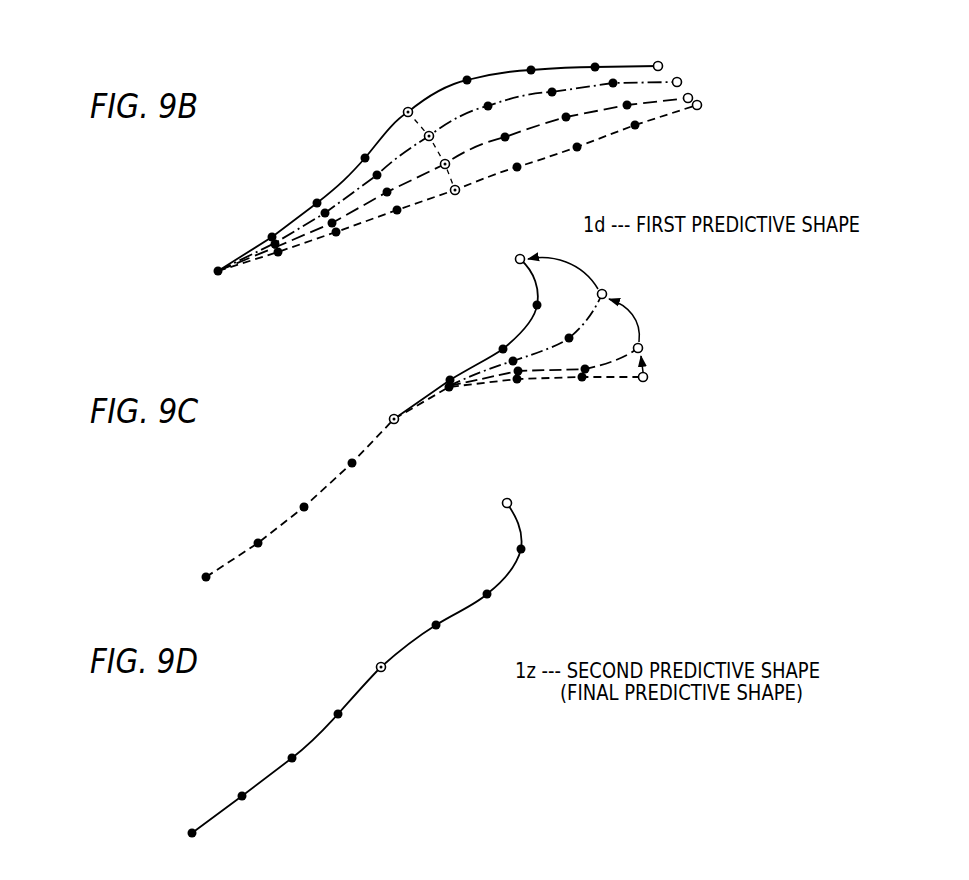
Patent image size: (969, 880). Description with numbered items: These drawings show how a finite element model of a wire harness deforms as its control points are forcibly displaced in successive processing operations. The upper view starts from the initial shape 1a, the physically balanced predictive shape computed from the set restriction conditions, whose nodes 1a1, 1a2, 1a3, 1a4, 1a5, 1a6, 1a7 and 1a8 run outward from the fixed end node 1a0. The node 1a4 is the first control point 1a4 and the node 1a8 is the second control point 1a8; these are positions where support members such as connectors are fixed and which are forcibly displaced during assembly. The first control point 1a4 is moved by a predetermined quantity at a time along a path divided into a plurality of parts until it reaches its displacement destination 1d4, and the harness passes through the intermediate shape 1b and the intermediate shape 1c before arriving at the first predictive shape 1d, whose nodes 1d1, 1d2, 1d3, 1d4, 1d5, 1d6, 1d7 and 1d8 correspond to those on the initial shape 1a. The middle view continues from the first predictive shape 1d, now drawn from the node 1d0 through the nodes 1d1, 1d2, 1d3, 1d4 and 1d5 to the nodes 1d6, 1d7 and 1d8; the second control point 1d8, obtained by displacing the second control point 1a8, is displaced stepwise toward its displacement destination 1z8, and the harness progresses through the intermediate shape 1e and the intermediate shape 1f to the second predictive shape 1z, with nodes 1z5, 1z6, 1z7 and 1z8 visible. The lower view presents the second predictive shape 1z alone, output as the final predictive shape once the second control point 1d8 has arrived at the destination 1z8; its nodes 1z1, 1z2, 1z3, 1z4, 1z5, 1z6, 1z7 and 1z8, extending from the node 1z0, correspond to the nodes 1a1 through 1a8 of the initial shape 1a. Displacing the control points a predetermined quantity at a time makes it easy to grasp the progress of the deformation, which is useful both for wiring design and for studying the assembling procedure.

In FIG. 9B, the initial shape 1a is at (627, 136).
In FIG. 9B, the intermediate shape 1b is at (462, 151).
In FIG. 9B, the intermediate shape 1c is at (447, 115).
In FIG. 9B, the first predictive shape 1d is at (629, 62).
In FIG. 9C, the first predictive shape 1d is at (378, 430).
In FIG. 9C, the intermediate shape 1e is at (603, 360).
In FIG. 9C, the intermediate shape 1f is at (584, 320).
In FIG. 9C, the second predictive shape 1z is at (530, 285).
In FIG. 9D, the second predictive shape 1z is at (360, 682).
In FIG. 9B, the initial shape point 0 1a0 is at (221, 274).
In FIG. 9B, the node 1a1 is at (280, 255).
In FIG. 9B, the node 1a2 is at (338, 236).
In FIG. 9B, the node 1a3 is at (399, 214).
In FIG. 9B, the first control point 1a4 is at (458, 193).
In FIG. 9B, the node 1a5 is at (518, 171).
In FIG. 9B, the node 1a6 is at (579, 151).
In FIG. 9B, the node 1a7 is at (637, 129).
In FIG. 9B, the second control point 1a8 is at (701, 107).
In FIG. 9C, the first predictive shape point 0 1d0 is at (209, 580).
In FIG. 9B, the node 1d1 is at (272, 233).
In FIG. 9C, the node 1d1 is at (261, 546).
In FIG. 9B, the node 1d2 is at (317, 199).
In FIG. 9C, the node 1d2 is at (307, 510).
In FIG. 9B, the node 1d3 is at (364, 154).
In FIG. 9C, the node 1d3 is at (355, 466).
In FIG. 9B, the displacement destination 1d4 is at (405, 108).
In FIG. 9C, the displacement destination 1d4 is at (397, 423).
In FIG. 9B, the node 1d5 is at (467, 76).
In FIG. 9C, the node 1d5 is at (450, 391).
In FIG. 9B, the node 1d6 is at (531, 66).
In FIG. 9C, the node 1d6 is at (518, 383).
In FIG. 9B, the node 1d7 is at (595, 63).
In FIG. 9C, the node 1d7 is at (583, 381).
In FIG. 9B, the second control point 1d8 is at (661, 62).
In FIG. 9C, the second control point 1d8 is at (644, 381).
In FIG. 9D, the second predictive shape point 0 1z0 is at (195, 836).
In FIG. 9D, the node 1z1 is at (245, 799).
In FIG. 9D, the node 1z2 is at (295, 761).
In FIG. 9D, the node 1z3 is at (341, 717).
In FIG. 9D, the node 1z4 is at (385, 669).
In FIG. 9C, the node 1z5 is at (449, 376).
In FIG. 9D, the node 1z5 is at (440, 628).
In FIG. 9C, the node 1z6 is at (500, 347).
In FIG. 9D, the node 1z6 is at (491, 597).
In FIG. 9C, the node 1z7 is at (533, 307).
In FIG. 9D, the node 1z7 is at (525, 550).
In FIG. 9C, the displacement destination 1z8 is at (515, 260).
In FIG. 9D, the displacement destination 1z8 is at (511, 503).